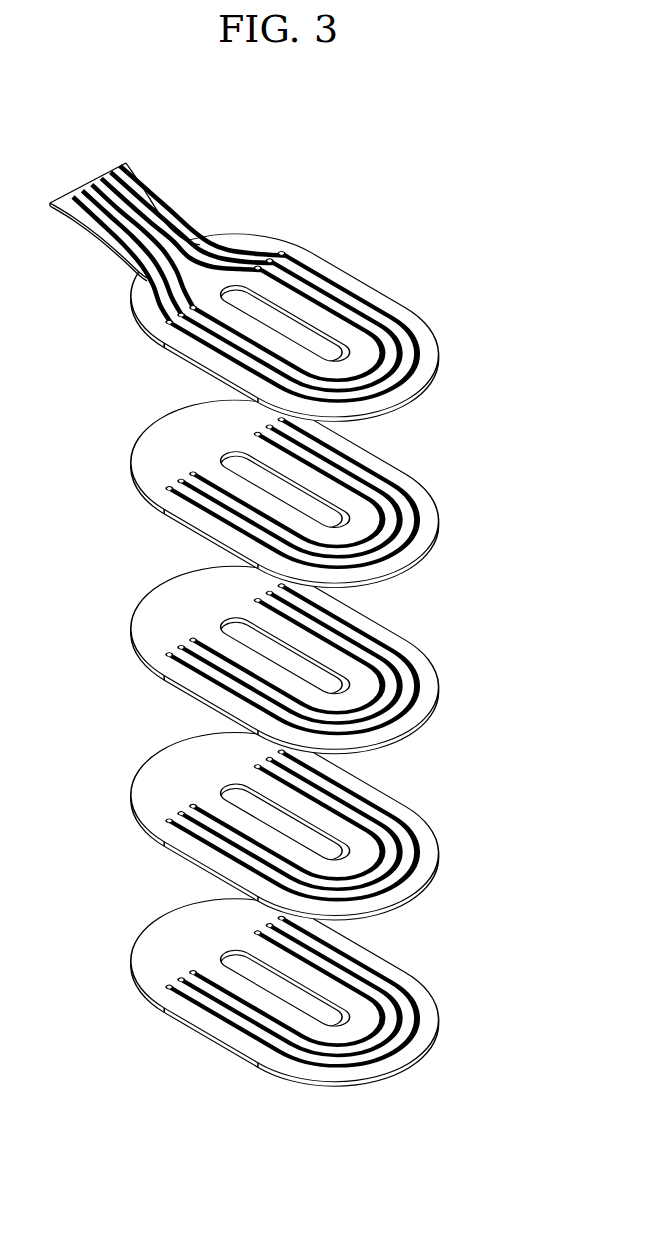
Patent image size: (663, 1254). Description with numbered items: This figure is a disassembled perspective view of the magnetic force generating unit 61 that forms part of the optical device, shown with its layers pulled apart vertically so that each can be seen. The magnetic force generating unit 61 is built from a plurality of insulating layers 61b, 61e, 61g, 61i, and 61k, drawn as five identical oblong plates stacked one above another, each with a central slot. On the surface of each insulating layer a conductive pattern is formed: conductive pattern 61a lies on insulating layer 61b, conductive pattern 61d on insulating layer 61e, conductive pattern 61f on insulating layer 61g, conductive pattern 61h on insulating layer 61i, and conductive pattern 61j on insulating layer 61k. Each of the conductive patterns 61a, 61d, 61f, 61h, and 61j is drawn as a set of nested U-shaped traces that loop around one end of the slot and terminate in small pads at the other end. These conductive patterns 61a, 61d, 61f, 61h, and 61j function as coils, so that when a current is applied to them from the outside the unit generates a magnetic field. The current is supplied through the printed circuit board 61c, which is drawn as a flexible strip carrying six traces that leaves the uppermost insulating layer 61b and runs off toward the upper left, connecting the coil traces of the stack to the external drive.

The magnetic force generating unit 61 is at (507, 190).
The conductive pattern 61a is at (398, 320).
The insulating layer 61b is at (420, 377).
The printed circuit board 61c is at (143, 188).
The conductive pattern 61d is at (415, 502).
The insulating layer 61e is at (423, 540).
The conductive pattern 61f is at (415, 668).
The insulating layer 61g is at (423, 706).
The conductive pattern 61h is at (415, 834).
The insulating layer 61i is at (423, 872).
The conductive pattern 61j is at (415, 1001).
The insulating layer 61k is at (423, 1039).